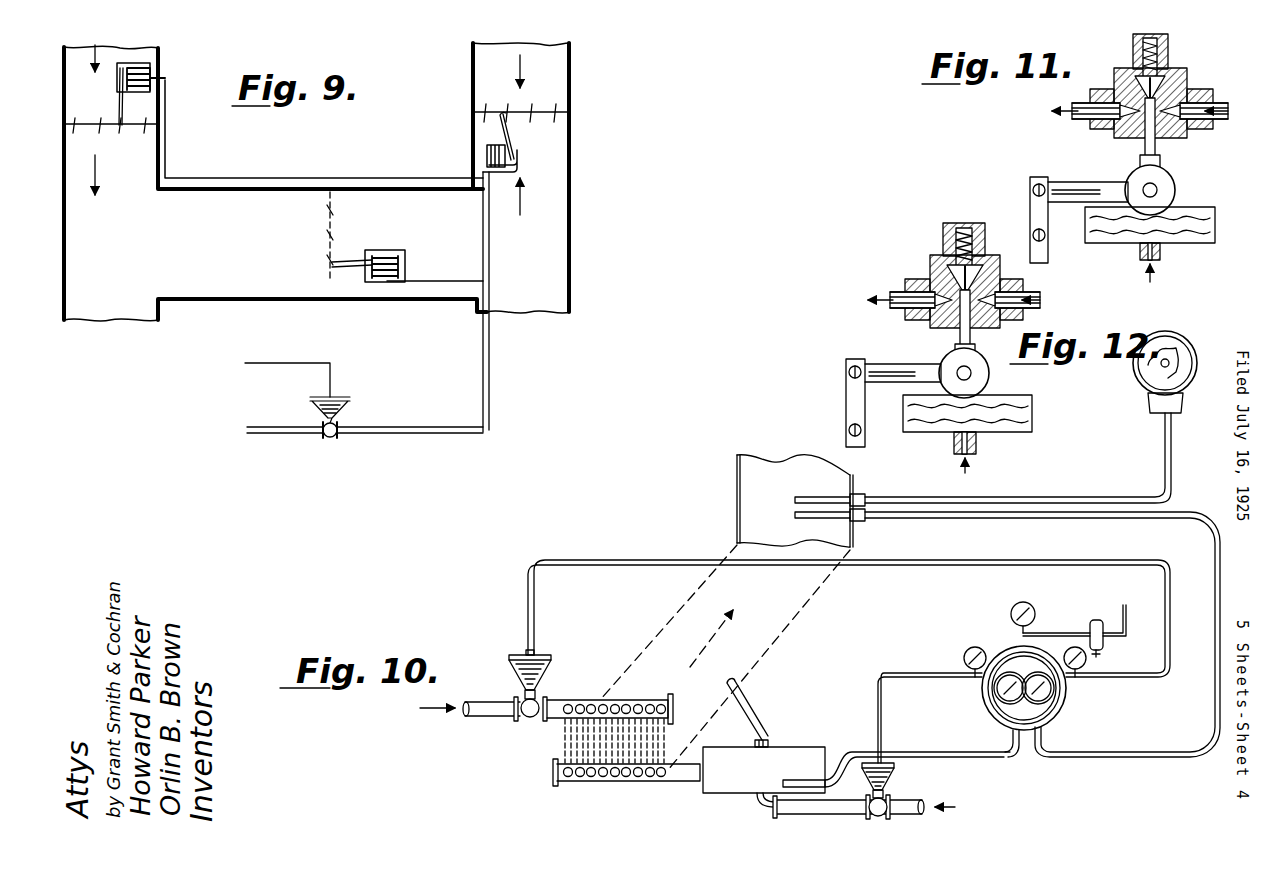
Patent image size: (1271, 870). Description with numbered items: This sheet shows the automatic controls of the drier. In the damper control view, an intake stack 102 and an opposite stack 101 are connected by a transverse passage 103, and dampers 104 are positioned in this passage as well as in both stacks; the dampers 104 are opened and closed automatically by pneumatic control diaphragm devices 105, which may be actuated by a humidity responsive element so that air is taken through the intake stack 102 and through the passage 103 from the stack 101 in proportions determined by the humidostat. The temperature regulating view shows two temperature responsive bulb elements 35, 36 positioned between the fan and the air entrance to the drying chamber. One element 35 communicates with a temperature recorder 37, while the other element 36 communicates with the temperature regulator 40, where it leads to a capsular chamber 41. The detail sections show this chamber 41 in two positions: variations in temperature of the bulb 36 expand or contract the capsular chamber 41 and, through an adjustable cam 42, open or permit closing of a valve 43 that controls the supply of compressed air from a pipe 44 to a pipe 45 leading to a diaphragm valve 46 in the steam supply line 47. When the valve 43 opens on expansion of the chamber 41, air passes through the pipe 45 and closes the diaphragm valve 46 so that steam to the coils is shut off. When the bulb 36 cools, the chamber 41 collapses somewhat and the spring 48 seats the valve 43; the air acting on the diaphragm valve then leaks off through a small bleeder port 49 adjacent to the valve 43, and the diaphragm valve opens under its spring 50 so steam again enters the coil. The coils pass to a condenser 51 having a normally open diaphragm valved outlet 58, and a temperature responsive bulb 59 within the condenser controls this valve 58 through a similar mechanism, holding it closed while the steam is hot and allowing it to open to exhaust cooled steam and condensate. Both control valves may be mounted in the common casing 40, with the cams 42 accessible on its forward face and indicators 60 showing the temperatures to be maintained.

In FIG. 9, the stack 101 is at (565, 225).
In FIG. 9, the intake stack 102 is at (90, 318).
In FIG. 9, the transverse passage 103 is at (368, 196).
In FIG. 9, the dampers 104 is at (97, 124).
In FIG. 9, the pneumatic control diaphragm devices 105 is at (153, 84).
In FIG. 10, the temperature responsive bulb element 35 is at (850, 497).
In FIG. 10, the temperature responsive bulb element 36 is at (835, 522).
In FIG. 10, the temperature recorder 37 is at (1192, 378).
In FIG. 10, the temperature regulator 40 is at (1055, 712).
In FIG. 11, the capsular chamber 41 is at (1205, 240).
In FIG. 12, the capsular chamber 41 is at (1020, 418).
In FIG. 11, the adjustable cam 42 is at (1160, 193).
In FIG. 12, the adjustable cam 42 is at (943, 362).
In FIG. 11, the valve 43 is at (1160, 96).
In FIG. 12, the valve 43 is at (975, 275).
In FIG. 11, the pipe 44 is at (1218, 120).
In FIG. 12, the pipe 44 is at (1030, 292).
In FIG. 11, the pipe 45 is at (1082, 118).
In FIG. 12, the pipe 45 is at (897, 292).
In FIG. 10, the pipe 45 is at (1205, 566).
In FIG. 10, the diaphragm valve 46 is at (527, 650).
In FIG. 10, the steam supply line 47 is at (560, 702).
In FIG. 11, the spring 48 is at (1138, 48).
In FIG. 12, the spring 48 is at (964, 228).
In FIG. 11, the bleeder port 49 is at (1128, 136).
In FIG. 12, the bleeder port 49 is at (946, 255).
In FIG. 10, the spring 50 is at (515, 675).
In FIG. 10, the condenser 51 is at (783, 750).
In FIG. 10, the diaphragm valved outlet 58 is at (885, 797).
In FIG. 10, the temperature responsive bulb 59 is at (812, 778).
In FIG. 10, the indicators 60 is at (1008, 672).